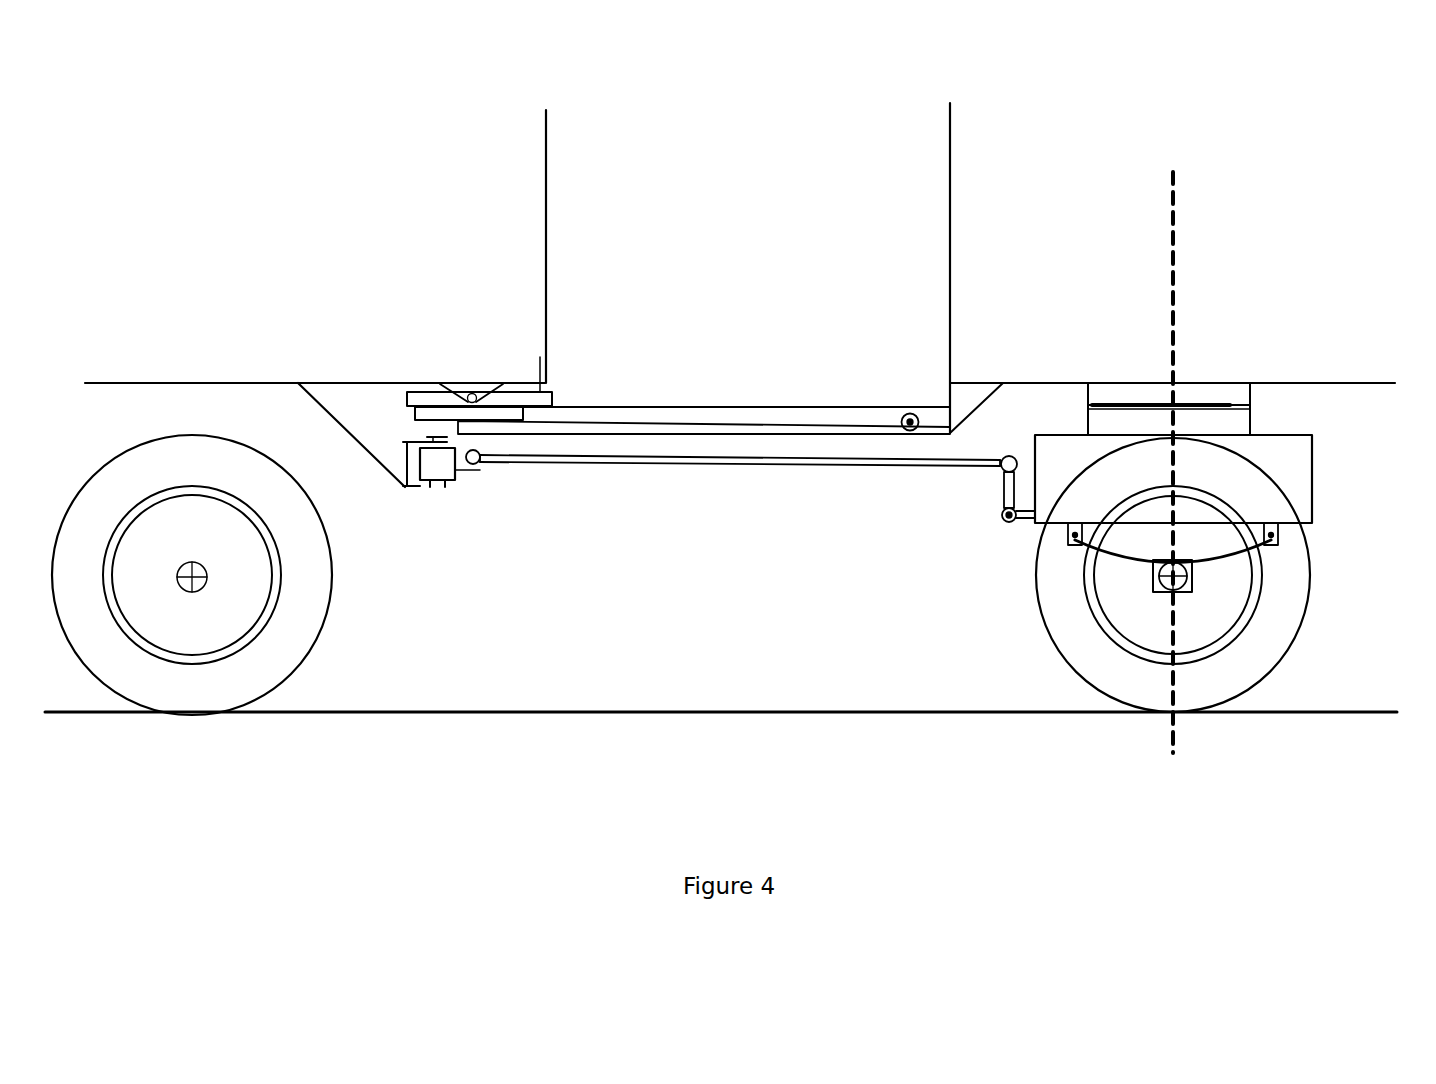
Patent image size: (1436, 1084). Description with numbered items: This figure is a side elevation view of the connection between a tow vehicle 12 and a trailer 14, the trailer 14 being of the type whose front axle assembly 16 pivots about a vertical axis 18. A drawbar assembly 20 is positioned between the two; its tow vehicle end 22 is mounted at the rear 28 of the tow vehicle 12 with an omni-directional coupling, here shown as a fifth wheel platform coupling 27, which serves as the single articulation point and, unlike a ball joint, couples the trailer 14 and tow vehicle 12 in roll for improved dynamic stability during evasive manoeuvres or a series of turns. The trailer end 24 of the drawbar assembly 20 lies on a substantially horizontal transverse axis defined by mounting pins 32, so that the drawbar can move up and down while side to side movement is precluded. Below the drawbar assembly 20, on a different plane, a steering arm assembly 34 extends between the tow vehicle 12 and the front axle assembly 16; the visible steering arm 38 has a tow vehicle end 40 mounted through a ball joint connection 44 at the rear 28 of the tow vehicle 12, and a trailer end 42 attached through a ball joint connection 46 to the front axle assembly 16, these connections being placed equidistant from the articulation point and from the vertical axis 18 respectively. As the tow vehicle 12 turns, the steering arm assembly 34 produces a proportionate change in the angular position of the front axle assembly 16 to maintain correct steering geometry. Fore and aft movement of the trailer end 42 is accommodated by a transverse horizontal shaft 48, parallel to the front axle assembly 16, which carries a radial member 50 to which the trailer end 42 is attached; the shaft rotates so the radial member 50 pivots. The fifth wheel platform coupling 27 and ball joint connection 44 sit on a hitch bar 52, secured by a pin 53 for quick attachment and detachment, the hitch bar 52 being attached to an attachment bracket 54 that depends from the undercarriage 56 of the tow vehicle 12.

The tow vehicle 12 is at (535, 223).
The trailer 14 is at (967, 220).
The front axle assembly 16 is at (1190, 577).
The vertical axis 18 is at (1180, 270).
The drawbar assembly 20 is at (714, 398).
The tow vehicle end 22 is at (557, 420).
The trailer end 24 is at (871, 412).
The fifth wheel platform coupling 27 is at (533, 395).
The rear 28 is at (540, 357).
The mounting pins 32 is at (905, 414).
The steering arm assembly 34 is at (690, 482).
The steering arm 38 is at (757, 463).
The tow vehicle end 40 is at (530, 460).
The trailer end 42 is at (988, 465).
The ball joint connection 44 is at (480, 464).
The ball joint connection 46 is at (1012, 457).
The transverse horizontal shaft 48 is at (1005, 522).
The radial member 50 is at (225, 375).
The hitch bar 52 is at (443, 484).
The pin 53 is at (405, 428).
The attachment bracket 54 is at (378, 435).
The undercarriage 56 is at (433, 397).